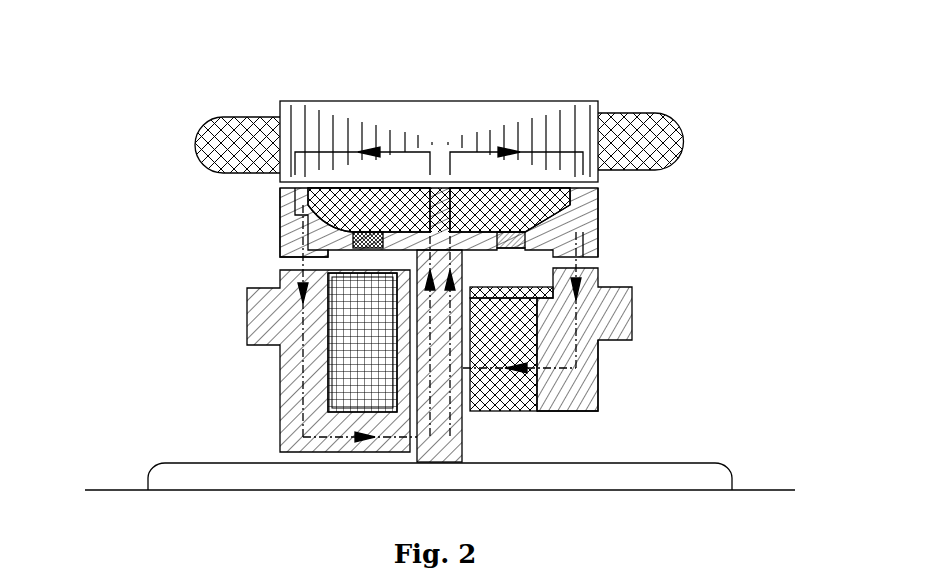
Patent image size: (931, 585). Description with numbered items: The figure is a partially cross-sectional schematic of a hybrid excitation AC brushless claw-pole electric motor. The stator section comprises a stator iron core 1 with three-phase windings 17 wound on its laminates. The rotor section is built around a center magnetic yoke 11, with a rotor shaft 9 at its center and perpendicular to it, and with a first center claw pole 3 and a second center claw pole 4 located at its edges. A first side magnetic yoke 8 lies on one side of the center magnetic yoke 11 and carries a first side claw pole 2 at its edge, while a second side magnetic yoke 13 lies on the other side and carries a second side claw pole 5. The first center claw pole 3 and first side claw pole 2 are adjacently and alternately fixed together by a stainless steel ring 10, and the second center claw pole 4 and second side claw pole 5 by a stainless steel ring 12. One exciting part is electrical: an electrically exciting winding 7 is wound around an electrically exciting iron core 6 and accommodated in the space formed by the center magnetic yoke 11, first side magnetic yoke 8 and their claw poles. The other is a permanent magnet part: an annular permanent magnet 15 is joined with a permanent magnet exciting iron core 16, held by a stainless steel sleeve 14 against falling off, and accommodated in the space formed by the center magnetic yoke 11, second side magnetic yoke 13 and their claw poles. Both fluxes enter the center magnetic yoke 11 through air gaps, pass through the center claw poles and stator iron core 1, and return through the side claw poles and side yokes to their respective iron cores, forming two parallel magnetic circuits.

The stator iron core 1 is at (307, 135).
The first side claw pole 2 is at (432, 190).
The first center claw pole 3 is at (322, 190).
The second center claw pole 4 is at (558, 190).
The second side claw pole 5 is at (452, 190).
The electrically exciting iron core 6 is at (290, 310).
The electrically exciting winding 7 is at (353, 347).
The first side magnetic yoke 8 is at (300, 247).
The rotor shaft 9 is at (183, 477).
The stainless steel ring 10 is at (285, 222).
The center magnetic yoke 11 is at (447, 445).
The stainless steel ring 12 is at (520, 240).
The second side magnetic yoke 13 is at (575, 245).
The stainless steel sleeve 14 is at (565, 290).
The annular permanent magnet 15 is at (525, 361).
The permanent magnet exciting iron core 16 is at (592, 390).
The three-phase windings 17 is at (243, 153).